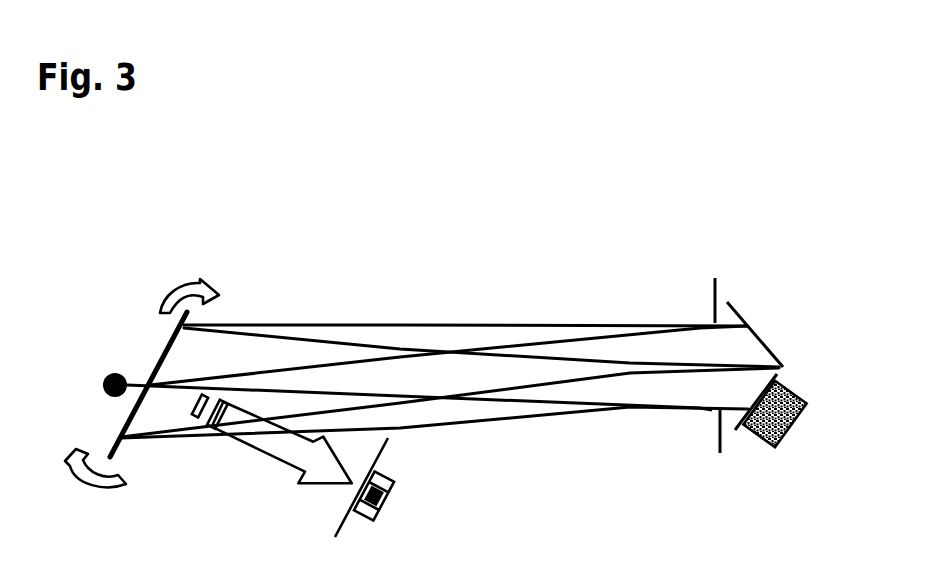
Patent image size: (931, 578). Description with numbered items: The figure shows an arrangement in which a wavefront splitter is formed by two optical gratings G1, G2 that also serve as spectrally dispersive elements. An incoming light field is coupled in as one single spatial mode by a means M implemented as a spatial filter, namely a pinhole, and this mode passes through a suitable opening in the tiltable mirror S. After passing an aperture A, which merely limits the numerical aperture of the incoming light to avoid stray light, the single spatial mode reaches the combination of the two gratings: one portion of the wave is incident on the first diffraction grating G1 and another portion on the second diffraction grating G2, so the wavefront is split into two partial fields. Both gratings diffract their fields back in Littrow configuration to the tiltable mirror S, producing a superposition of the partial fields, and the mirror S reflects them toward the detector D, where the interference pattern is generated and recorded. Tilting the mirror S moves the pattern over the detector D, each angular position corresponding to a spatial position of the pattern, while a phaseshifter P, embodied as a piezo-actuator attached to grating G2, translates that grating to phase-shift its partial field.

The means for coupling in one single spatial mode M is at (387, 384).
The tiltable mirror S is at (142, 368).
The aperture A is at (699, 343).
The first diffraction grating G1 is at (765, 325).
The second diffraction grating G2 is at (767, 439).
The phaseshifter P is at (787, 414).
The detector D is at (381, 487).